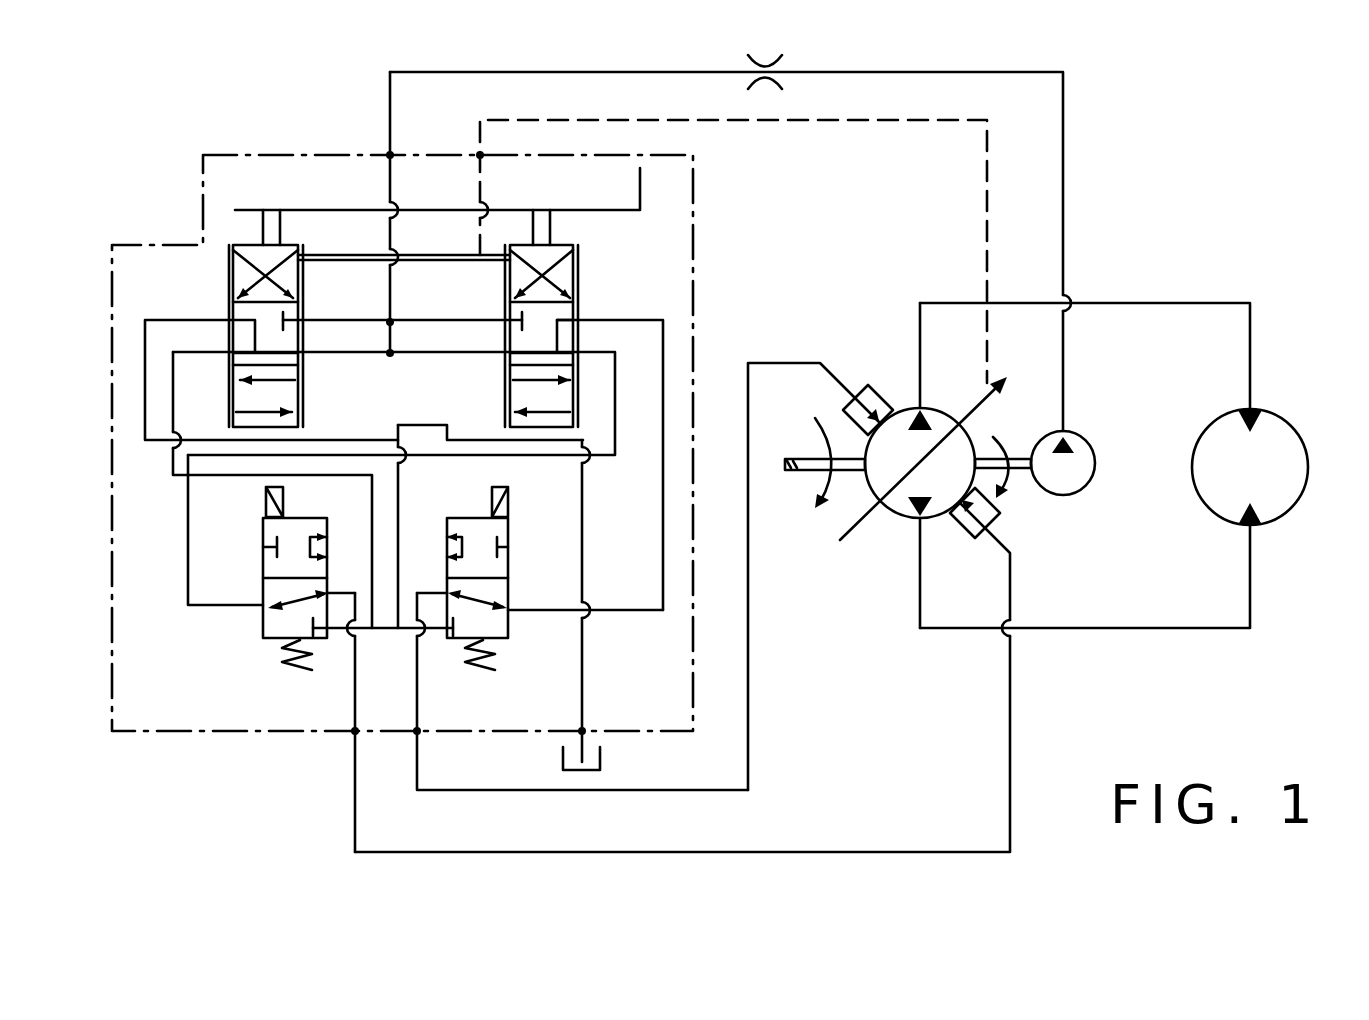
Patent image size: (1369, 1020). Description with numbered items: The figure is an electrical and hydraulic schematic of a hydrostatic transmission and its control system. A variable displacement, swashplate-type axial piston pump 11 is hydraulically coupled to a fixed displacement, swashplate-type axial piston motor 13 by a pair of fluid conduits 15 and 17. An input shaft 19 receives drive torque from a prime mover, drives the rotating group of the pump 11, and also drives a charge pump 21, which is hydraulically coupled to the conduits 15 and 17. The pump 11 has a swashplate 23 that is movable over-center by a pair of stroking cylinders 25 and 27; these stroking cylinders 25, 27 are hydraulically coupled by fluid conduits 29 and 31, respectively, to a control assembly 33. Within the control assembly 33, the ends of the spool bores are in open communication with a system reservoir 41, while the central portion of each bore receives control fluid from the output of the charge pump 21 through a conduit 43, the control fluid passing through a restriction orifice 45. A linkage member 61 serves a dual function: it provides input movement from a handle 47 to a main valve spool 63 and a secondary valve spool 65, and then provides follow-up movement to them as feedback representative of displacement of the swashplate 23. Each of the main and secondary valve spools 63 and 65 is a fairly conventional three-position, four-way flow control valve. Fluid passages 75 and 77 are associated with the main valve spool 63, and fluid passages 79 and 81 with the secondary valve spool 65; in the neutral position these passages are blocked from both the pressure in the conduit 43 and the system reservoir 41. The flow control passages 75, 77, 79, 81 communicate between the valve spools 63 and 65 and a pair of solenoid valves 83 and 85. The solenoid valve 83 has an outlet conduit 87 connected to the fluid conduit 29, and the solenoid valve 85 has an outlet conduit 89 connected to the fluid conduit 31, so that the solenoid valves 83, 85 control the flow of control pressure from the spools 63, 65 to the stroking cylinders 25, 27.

The axial piston pump 11 is at (878, 540).
The axial piston motor 13 is at (1310, 503).
The fluid conduit 15 is at (1170, 303).
The fluid conduit 17 is at (1147, 627).
The input shaft 19 is at (805, 458).
The charge pump 21 is at (1088, 451).
The swashplate 23 is at (852, 522).
The stroking cylinder 25 is at (888, 395).
The stroking cylinder 27 is at (962, 538).
The fluid conduit 29 is at (750, 663).
The fluid conduit 31 is at (893, 852).
The control assembly 33 is at (318, 140).
The system reservoir 41 is at (603, 760).
The conduit 43 is at (980, 72).
The restriction orifice 45 is at (742, 66).
The handle 47 is at (638, 172).
The linkage member 61 is at (352, 250).
The main valve spool 63 is at (565, 246).
The secondary valve spool 65 is at (250, 240).
The fluid passage 75 is at (577, 321).
The fluid passage 77 is at (580, 352).
The fluid passage 79 is at (231, 318).
The fluid passage 81 is at (228, 355).
The solenoid valve 83 is at (476, 517).
The solenoid valve 85 is at (303, 517).
The outlet conduit 87 is at (420, 700).
The outlet conduit 89 is at (353, 700).